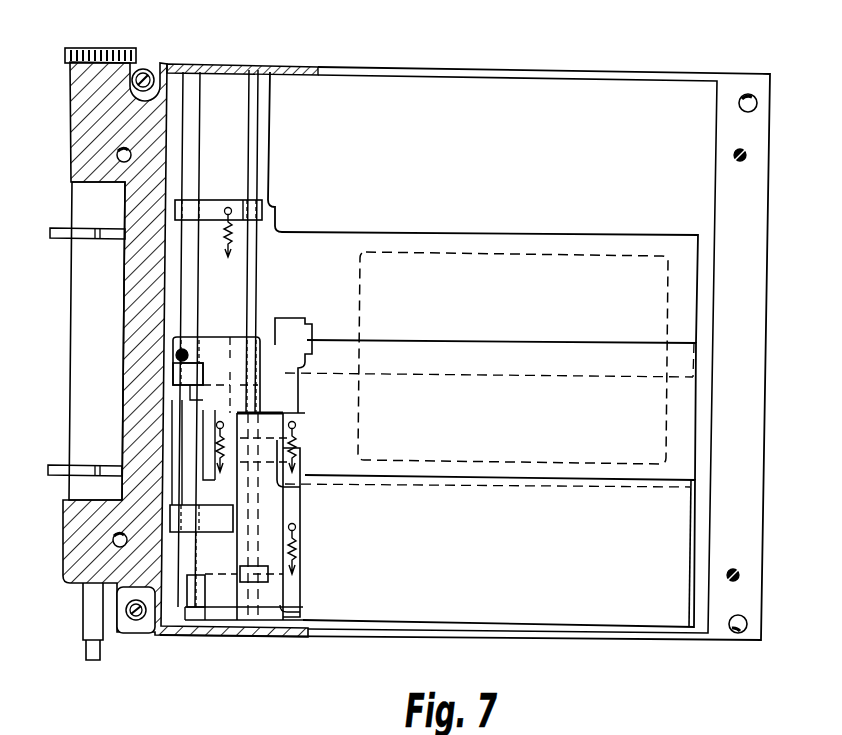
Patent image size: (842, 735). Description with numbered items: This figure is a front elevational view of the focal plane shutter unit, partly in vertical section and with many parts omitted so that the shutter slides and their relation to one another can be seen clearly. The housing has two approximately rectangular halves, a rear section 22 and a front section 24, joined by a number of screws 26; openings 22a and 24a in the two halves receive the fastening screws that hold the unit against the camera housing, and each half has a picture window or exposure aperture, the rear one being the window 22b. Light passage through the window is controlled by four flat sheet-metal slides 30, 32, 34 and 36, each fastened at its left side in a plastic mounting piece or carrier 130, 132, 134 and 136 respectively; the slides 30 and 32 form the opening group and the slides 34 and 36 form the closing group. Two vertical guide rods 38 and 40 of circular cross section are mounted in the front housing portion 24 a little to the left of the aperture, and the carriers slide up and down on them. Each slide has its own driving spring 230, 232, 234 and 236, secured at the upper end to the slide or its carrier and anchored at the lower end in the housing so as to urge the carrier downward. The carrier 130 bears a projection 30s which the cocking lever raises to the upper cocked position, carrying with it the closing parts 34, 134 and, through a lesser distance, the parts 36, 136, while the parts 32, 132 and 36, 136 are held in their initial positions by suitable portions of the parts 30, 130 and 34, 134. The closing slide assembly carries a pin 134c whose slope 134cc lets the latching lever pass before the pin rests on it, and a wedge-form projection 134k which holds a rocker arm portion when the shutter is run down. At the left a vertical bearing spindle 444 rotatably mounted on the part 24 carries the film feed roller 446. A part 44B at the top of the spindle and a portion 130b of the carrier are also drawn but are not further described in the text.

The rear section 22 is at (493, 70).
The opening 22a is at (747, 96).
The picture window 22b is at (498, 262).
The front section 24 is at (299, 64).
The opening 24a is at (128, 154).
The screws 26 is at (143, 70).
The slide 30 is at (700, 508).
The projection 30s is at (270, 582).
The slide 32 is at (691, 543).
The slide 34 is at (700, 430).
The slide 36 is at (700, 270).
The guide rod 38 is at (259, 64).
The guide rod 40 is at (193, 64).
The knurled knob 44B is at (102, 45).
The film feed roller 446 is at (120, 290).
The bearing spindle 444 is at (96, 660).
The carrier 130 is at (270, 508).
The carriage head 130b is at (290, 424).
The carrier 132 is at (293, 516).
The carrier 134 is at (223, 342).
The pin 134c is at (176, 355).
The slope 134cc is at (178, 366).
The wedge-form projection 134k is at (306, 332).
The carrier 136 is at (232, 290).
The driving spring 230 is at (296, 445).
The driving spring 232 is at (296, 551).
The driving spring 234 is at (224, 453).
The driving spring 236 is at (236, 238).